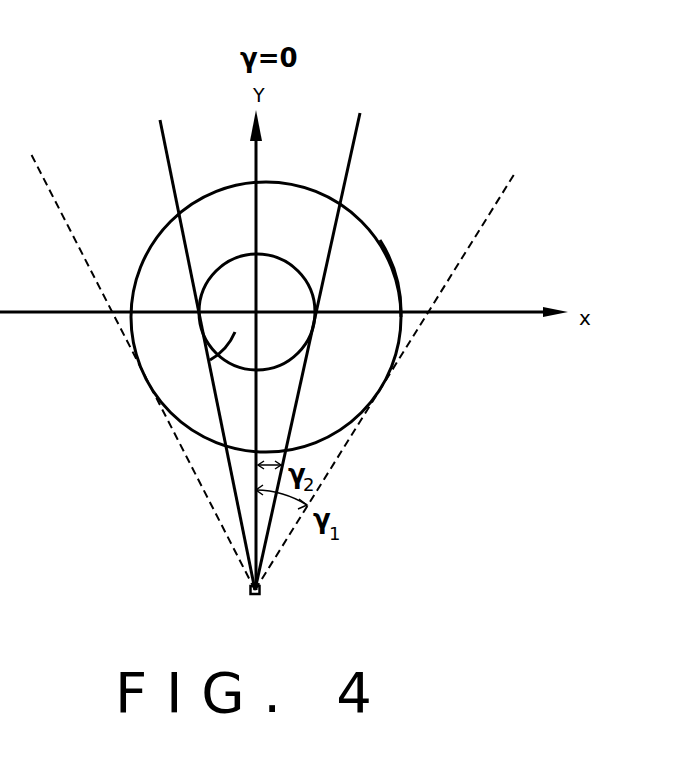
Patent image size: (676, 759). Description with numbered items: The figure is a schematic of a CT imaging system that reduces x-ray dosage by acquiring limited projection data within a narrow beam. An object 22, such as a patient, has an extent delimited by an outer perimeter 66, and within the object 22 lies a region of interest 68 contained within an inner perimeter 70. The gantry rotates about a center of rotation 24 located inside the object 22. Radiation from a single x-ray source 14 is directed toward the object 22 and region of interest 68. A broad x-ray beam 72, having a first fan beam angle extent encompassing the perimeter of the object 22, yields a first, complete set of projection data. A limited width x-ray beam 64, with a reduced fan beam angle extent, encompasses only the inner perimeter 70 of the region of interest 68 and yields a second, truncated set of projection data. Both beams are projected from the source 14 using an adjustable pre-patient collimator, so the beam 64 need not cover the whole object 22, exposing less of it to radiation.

The x-ray source 14 is at (250, 592).
The object 22 is at (353, 363).
The center of rotation 24 is at (256, 312).
The limited width x-ray beam 64 is at (355, 147).
The outer perimeter 66 is at (397, 277).
The region of interest 68 is at (235, 332).
The inner perimeter 70 is at (289, 262).
The broad x-ray beam 72 is at (497, 210).